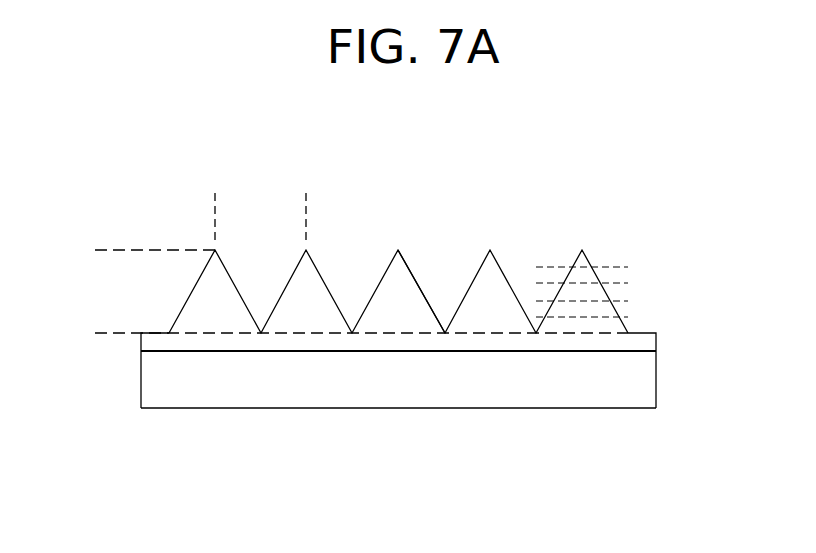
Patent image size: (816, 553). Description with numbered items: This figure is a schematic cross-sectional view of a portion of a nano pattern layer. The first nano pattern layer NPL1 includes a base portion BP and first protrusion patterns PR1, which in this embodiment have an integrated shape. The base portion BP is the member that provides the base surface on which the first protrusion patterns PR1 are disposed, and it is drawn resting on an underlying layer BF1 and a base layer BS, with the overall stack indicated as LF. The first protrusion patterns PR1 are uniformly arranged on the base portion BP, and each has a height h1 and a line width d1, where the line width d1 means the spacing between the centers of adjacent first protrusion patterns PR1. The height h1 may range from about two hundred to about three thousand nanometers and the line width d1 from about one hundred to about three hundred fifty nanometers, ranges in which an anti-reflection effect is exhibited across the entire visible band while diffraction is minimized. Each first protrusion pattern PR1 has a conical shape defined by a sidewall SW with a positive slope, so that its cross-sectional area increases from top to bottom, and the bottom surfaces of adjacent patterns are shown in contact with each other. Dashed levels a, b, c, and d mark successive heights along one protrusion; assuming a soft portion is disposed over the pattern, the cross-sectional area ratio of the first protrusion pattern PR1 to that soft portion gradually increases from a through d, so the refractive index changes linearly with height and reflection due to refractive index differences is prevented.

The first nano pattern layer NPL1 is at (398, 389).
The base portion BP is at (316, 341).
The first protrusion patterns PR1 is at (400, 312).
The first base film BF1 is at (512, 351).
The base layer BS is at (645, 382).
The light control film LF is at (562, 408).
The sidewall SW is at (415, 277).
The line width d1 is at (306, 194).
The height h1 is at (102, 250).
The point a is at (589, 267).
The point b is at (589, 283).
The point c is at (589, 301).
The point d is at (589, 317).